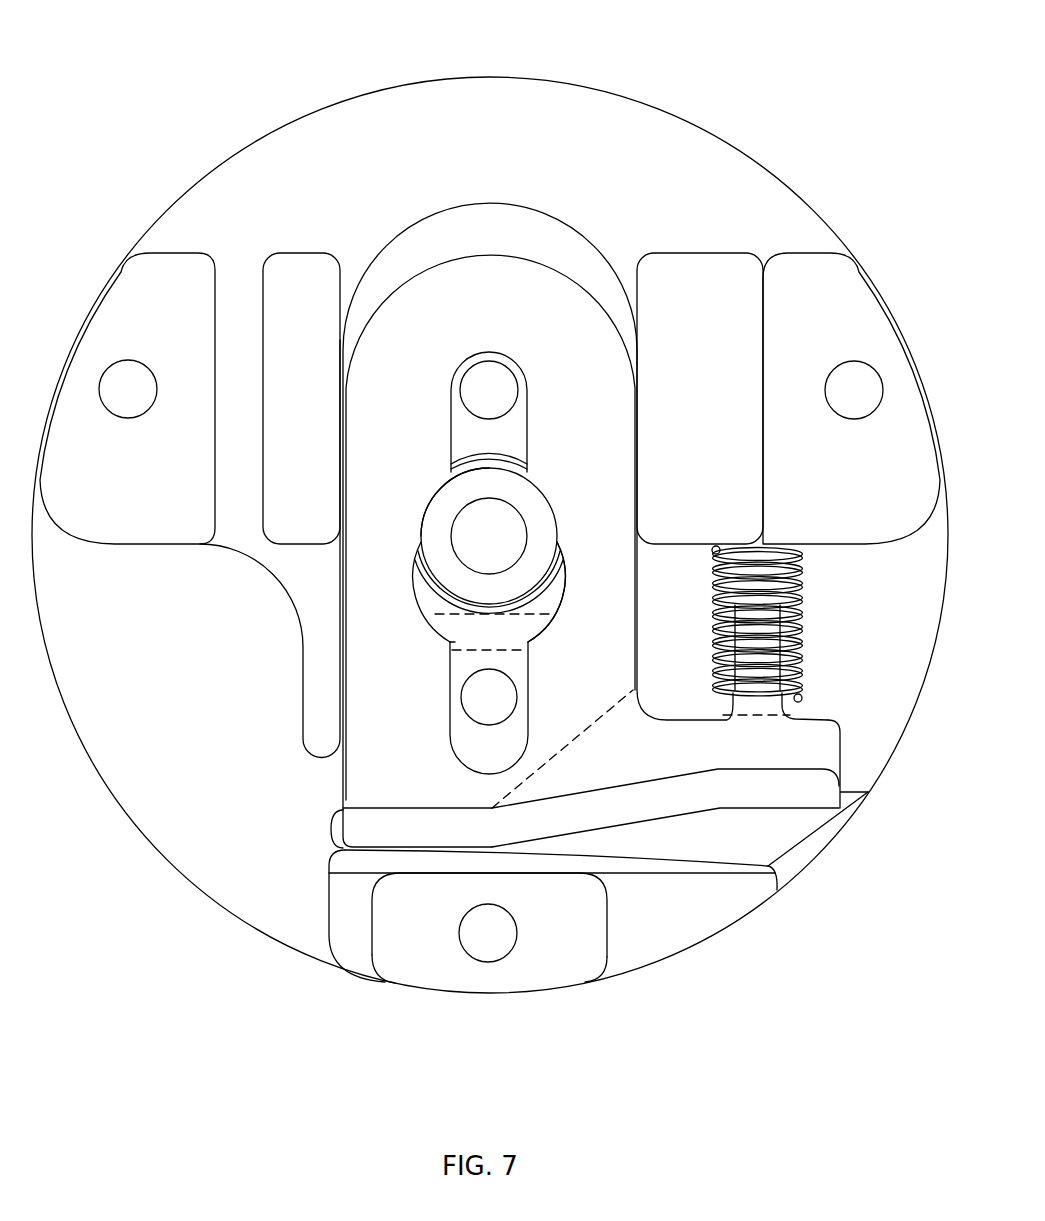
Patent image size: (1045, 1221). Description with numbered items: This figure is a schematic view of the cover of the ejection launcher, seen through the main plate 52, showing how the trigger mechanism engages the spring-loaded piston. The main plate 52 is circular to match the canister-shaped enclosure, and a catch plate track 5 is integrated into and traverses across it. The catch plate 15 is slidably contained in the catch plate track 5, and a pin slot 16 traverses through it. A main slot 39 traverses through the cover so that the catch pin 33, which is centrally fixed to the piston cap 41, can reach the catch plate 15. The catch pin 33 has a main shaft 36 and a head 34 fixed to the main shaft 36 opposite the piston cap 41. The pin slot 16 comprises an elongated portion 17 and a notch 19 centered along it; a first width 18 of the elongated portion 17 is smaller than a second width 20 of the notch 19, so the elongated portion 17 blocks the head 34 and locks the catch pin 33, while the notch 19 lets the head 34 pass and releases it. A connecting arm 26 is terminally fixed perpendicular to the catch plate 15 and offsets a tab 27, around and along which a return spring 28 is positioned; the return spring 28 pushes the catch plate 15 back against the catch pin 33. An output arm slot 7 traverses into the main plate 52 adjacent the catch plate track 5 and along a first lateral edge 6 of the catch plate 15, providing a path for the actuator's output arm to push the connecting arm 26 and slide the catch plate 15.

The main plate 52 is at (620, 107).
The catch plate track 5 is at (548, 227).
The catch plate 15 is at (383, 298).
The pin slot 16 is at (453, 453).
The piston cap 41 is at (525, 417).
The main slot 39 is at (528, 471).
The head 34 is at (543, 516).
The catch pin 33 is at (421, 526).
The main shaft 36 is at (422, 541).
The second width 20 is at (422, 607).
The notch 19 is at (550, 620).
The first width 18 is at (450, 642).
The elongated portion 17 is at (528, 723).
The return spring 28 is at (808, 650).
The tab 27 is at (730, 705).
The connecting arm 26 is at (827, 747).
The output arm slot 7 is at (796, 845).
The first lateral edge 6 is at (382, 848).